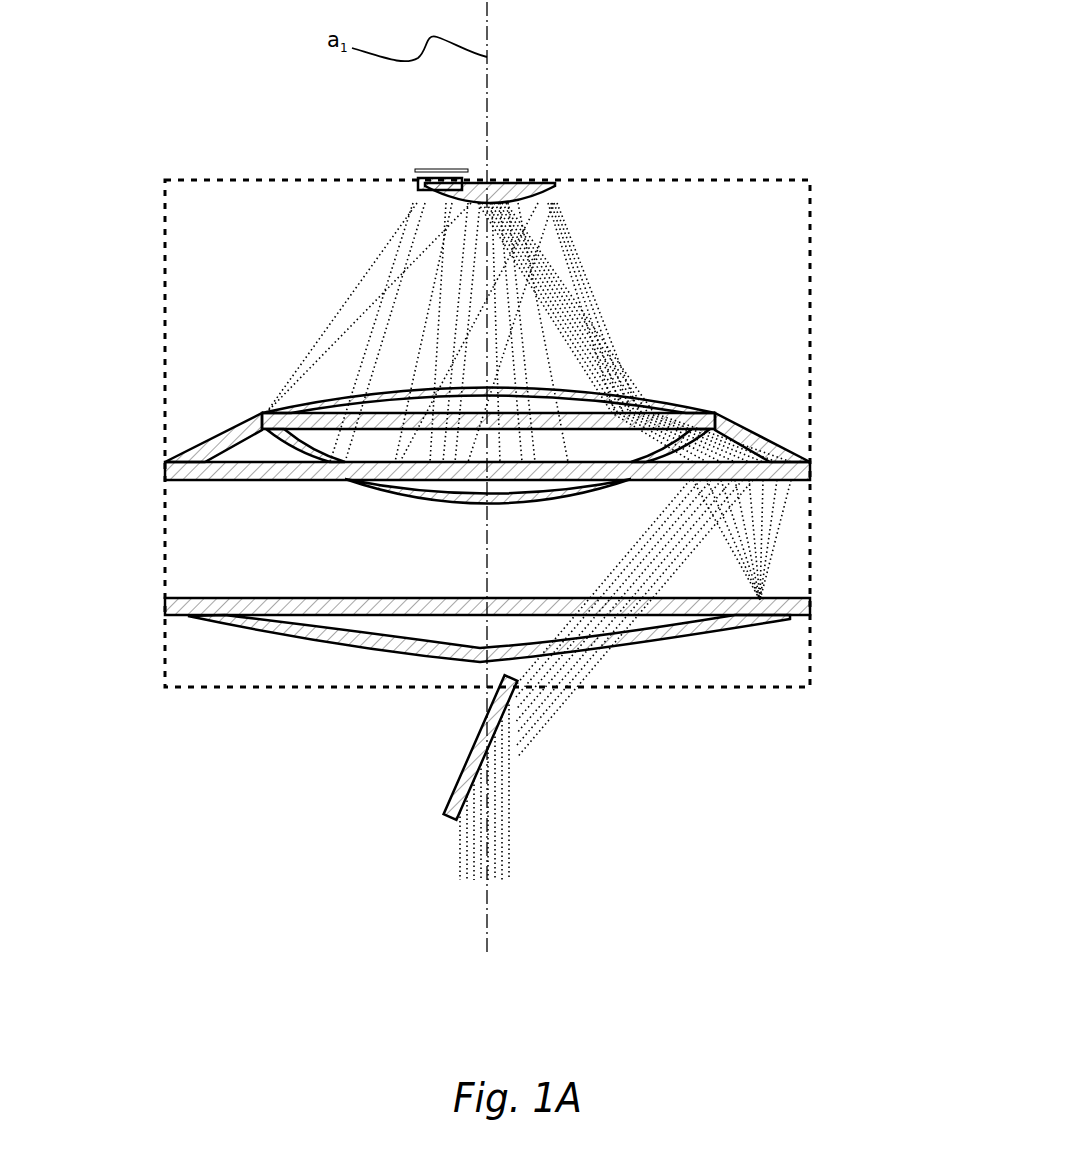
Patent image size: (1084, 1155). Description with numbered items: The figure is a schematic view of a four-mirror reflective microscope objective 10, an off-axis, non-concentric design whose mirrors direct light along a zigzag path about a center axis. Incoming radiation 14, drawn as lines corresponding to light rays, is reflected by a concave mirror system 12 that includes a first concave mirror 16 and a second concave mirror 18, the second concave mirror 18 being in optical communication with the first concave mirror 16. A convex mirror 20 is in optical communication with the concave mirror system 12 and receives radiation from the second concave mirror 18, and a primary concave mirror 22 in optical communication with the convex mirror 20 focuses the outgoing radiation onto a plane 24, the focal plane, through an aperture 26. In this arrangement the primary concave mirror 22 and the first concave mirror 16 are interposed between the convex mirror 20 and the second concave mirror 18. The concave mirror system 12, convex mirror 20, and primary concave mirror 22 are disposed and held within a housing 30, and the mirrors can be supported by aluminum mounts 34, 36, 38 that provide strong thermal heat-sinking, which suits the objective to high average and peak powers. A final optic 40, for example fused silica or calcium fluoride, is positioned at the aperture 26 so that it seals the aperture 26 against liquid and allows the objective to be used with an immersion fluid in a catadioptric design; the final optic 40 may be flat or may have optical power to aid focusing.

The reflective microscope objective 10 is at (487, 384).
The concave mirror system 12 is at (455, 407).
The incoming radiation 14 is at (532, 826).
The first concave mirror 16 is at (772, 445).
The second concave mirror 18 is at (707, 632).
The convex mirror 20 is at (505, 184).
The primary concave mirror 22 is at (345, 441).
The plane 24 is at (443, 171).
The aperture 26 is at (410, 186).
The housing 30 is at (220, 180).
The mount 34 is at (697, 414).
The mount 36 is at (812, 467).
The mount 38 is at (812, 600).
The final optic 40 is at (418, 180).